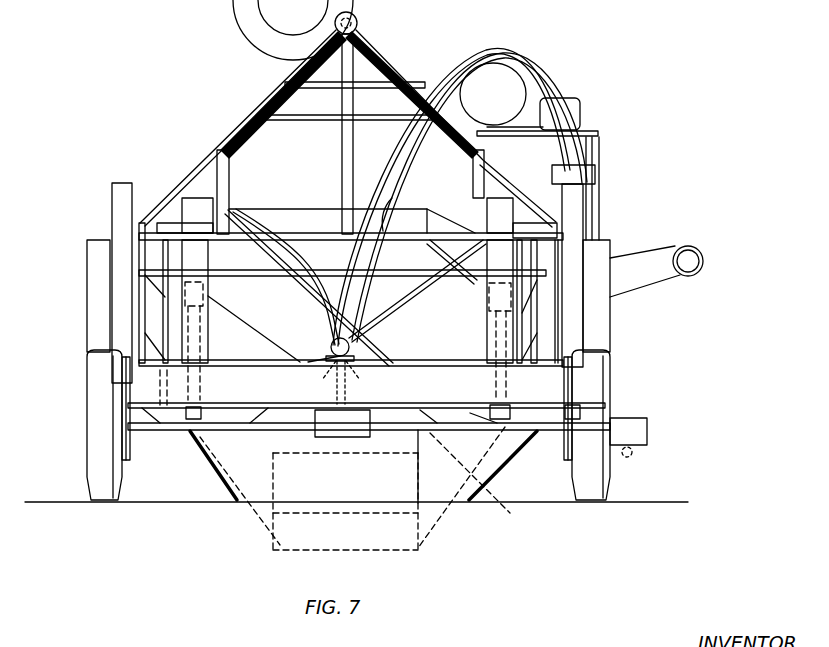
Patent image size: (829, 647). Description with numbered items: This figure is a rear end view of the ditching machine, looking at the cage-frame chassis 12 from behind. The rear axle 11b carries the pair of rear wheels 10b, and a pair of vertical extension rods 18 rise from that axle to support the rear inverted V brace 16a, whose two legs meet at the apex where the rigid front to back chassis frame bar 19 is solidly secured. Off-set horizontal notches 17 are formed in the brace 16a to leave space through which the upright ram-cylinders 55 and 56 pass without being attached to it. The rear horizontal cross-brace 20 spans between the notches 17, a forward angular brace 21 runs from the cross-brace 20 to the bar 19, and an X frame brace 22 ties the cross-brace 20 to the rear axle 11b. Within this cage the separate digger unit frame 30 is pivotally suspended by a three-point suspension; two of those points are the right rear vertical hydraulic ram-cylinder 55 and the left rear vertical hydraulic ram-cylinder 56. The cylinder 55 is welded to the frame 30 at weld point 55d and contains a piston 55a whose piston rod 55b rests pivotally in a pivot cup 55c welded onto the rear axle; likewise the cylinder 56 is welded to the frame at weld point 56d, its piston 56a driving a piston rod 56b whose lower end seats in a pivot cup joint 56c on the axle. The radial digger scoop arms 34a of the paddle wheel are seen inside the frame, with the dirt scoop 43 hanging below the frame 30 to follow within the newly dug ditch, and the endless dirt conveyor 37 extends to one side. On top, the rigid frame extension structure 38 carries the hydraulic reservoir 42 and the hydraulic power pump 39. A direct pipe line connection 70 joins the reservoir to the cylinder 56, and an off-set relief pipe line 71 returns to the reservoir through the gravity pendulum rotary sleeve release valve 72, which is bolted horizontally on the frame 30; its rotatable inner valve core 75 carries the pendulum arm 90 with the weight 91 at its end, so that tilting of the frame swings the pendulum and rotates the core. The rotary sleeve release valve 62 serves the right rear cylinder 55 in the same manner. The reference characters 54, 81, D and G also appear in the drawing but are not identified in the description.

The rear wheels 10b is at (96, 468).
The rear axle 11b is at (538, 432).
The cage-frame chassis 12 is at (253, 123).
The rear inverted V brace 16a is at (298, 71).
The off-set horizontal notches 17 is at (194, 190).
The vertical extension rods 18 is at (158, 321).
The front to back chassis frame bar 19 is at (360, 20).
The rear horizontal cross-brace 20 is at (388, 200).
The forward angular brace 21 is at (332, 164).
The X frame brace 22 is at (318, 286).
The digger unit frame 30 is at (434, 368).
The radial digger scoop arms 34a is at (318, 112).
The endless dirt conveyor 37 is at (704, 262).
The rigid frame extension structure 38 is at (593, 170).
The hydraulic power pump 39 is at (580, 108).
The hydraulic reservoir 42 is at (520, 84).
The dirt scoop 43 is at (192, 460).
The reel 54 is at (432, 0).
The right rear vertical hydraulic ram-cylinder 55 is at (488, 208).
The piston 55a is at (489, 290).
The piston rod 55b is at (600, 388).
The pivot cup 55c is at (495, 408).
The weld point 55d is at (590, 386).
The left rear vertical hydraulic ram-cylinder 56 is at (208, 245).
The piston 56a is at (205, 292).
The piston rod 56b is at (208, 318).
The pivot cup joint 56c is at (208, 408).
The weld point 56d is at (182, 406).
The rotary sleeve release valve 62 is at (654, 158).
The direct pipe line connection 70 is at (292, 264).
The off-set relief pipe line 71 is at (382, 156).
The gravity pendulum rotary sleeve release valve 72 is at (338, 366).
The rotatable inner valve core 75 is at (326, 328).
The bracket 81 is at (642, 430).
The pendulum arm 90 is at (356, 378).
The weight 91 is at (372, 432).
The dimension D is at (395, 562).
The ground G is at (672, 505).